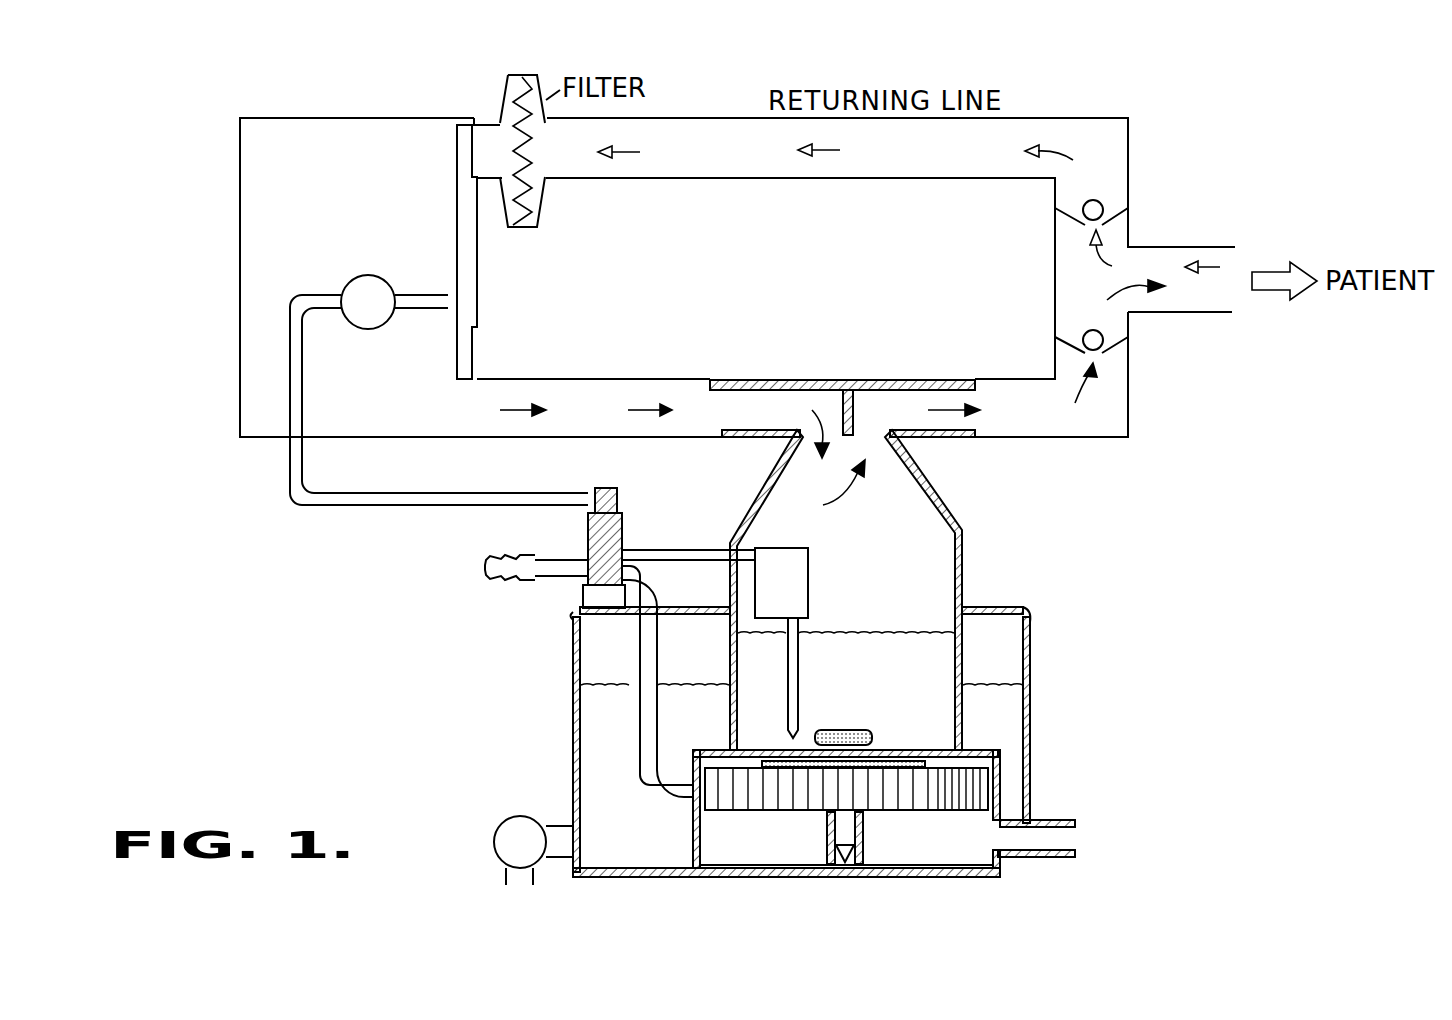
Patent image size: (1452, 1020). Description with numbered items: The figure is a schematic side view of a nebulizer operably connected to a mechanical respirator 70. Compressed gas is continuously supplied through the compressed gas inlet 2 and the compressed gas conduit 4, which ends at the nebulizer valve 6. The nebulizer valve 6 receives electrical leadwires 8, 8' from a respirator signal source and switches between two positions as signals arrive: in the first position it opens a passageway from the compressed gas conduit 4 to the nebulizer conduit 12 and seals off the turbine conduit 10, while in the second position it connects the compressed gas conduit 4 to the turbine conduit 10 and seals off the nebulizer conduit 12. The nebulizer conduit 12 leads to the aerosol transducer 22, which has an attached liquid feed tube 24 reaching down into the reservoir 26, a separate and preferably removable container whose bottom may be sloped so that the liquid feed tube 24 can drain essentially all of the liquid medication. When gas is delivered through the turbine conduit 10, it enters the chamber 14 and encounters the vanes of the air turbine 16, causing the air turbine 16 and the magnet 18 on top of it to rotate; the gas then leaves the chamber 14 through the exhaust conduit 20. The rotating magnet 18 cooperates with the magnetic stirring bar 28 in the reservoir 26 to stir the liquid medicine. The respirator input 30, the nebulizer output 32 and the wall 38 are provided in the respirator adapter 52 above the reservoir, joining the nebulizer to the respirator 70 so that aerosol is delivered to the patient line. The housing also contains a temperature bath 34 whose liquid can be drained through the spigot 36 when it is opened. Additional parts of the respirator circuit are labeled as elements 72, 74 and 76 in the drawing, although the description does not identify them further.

The compressed gas inlet 2 is at (483, 568).
The compressed gas conduit 4 is at (550, 572).
The nebulizer valve 6 is at (588, 584).
The electrical leadwire 8 is at (439, 400).
The electrical leadwire 8' is at (506, 536).
The turbine conduit 10 is at (640, 718).
The nebulizer conduit 12 is at (687, 550).
The chamber 14 is at (770, 870).
The air turbine 16 is at (903, 806).
The magnet 18 is at (925, 765).
The exhaust conduit 20 is at (1075, 826).
The aerosol transducer 22 is at (808, 556).
The liquid feed tube 24 is at (800, 670).
The reservoir 26 is at (932, 630).
The magnetic stirring bar 28 is at (838, 730).
The respirator input 30 is at (722, 388).
The nebulizer output 32 is at (975, 386).
The temperature bath 34 is at (633, 857).
The spigot 36 is at (513, 818).
The wall 38 is at (855, 400).
The respirator adapter 52 is at (797, 380).
The mechanical respirator 70 is at (240, 183).
The pump 72 is at (368, 276).
The partition wall 74 is at (488, 150).
The inner passage chamber 76 is at (480, 408).